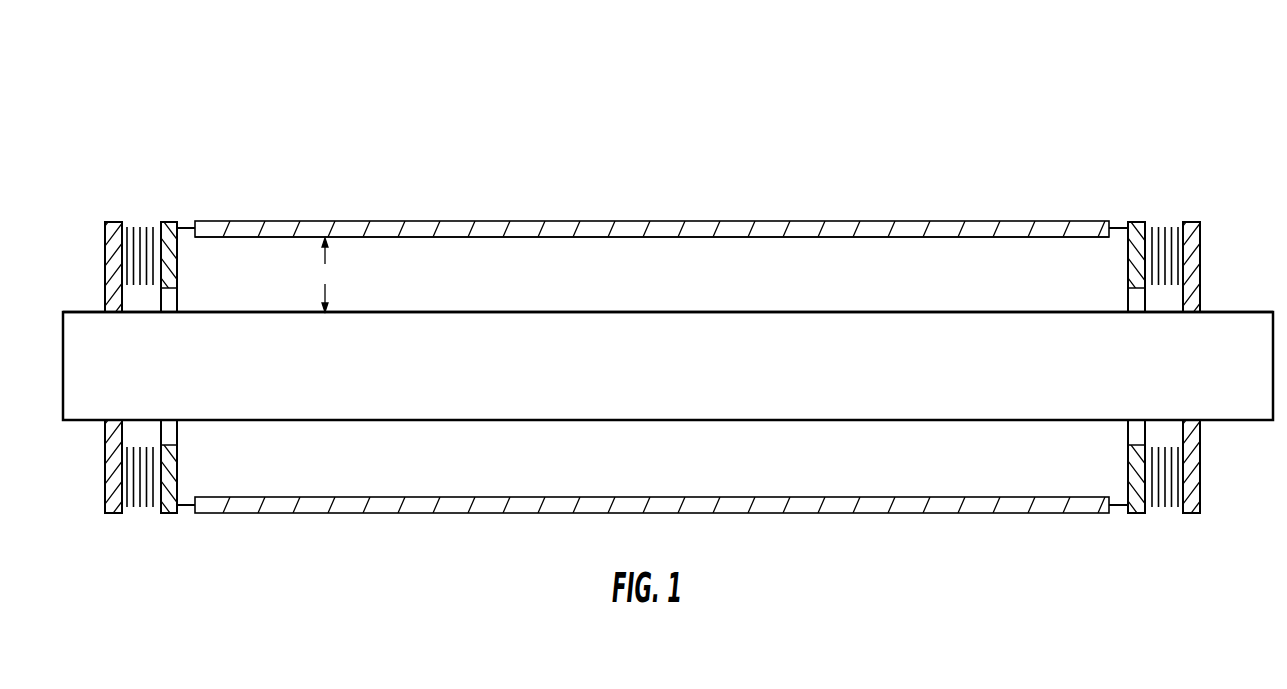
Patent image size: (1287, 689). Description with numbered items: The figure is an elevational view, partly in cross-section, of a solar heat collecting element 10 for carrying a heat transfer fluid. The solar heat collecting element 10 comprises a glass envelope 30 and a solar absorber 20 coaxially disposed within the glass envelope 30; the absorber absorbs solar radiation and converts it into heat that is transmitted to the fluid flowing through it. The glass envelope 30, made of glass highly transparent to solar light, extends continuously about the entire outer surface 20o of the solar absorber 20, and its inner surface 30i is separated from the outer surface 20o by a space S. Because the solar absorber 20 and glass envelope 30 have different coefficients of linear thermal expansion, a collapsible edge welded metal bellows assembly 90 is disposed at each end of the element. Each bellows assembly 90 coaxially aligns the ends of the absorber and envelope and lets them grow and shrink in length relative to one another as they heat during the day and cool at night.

The solar heat collecting element 10 is at (506, 124).
The solar absorber 20 is at (1223, 312).
The outer surface of the solar absorber 20o is at (713, 312).
The glass envelope 30 is at (825, 220).
The inner surface of the glass envelope 30i is at (463, 238).
The edge welded metal bellows assembly 90 is at (104, 480).